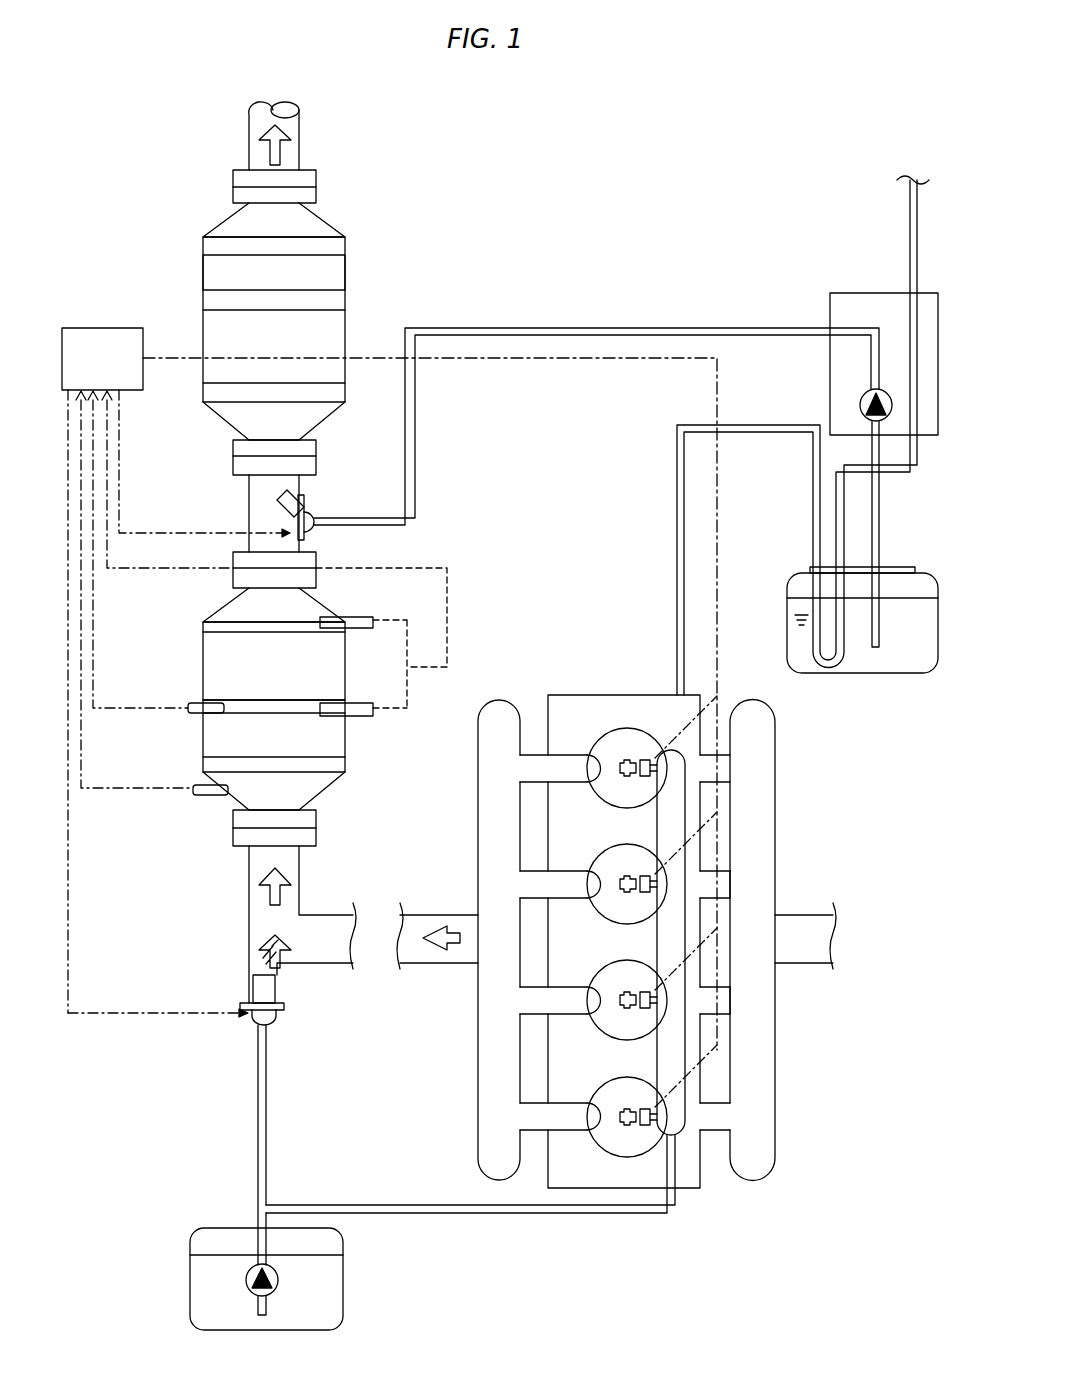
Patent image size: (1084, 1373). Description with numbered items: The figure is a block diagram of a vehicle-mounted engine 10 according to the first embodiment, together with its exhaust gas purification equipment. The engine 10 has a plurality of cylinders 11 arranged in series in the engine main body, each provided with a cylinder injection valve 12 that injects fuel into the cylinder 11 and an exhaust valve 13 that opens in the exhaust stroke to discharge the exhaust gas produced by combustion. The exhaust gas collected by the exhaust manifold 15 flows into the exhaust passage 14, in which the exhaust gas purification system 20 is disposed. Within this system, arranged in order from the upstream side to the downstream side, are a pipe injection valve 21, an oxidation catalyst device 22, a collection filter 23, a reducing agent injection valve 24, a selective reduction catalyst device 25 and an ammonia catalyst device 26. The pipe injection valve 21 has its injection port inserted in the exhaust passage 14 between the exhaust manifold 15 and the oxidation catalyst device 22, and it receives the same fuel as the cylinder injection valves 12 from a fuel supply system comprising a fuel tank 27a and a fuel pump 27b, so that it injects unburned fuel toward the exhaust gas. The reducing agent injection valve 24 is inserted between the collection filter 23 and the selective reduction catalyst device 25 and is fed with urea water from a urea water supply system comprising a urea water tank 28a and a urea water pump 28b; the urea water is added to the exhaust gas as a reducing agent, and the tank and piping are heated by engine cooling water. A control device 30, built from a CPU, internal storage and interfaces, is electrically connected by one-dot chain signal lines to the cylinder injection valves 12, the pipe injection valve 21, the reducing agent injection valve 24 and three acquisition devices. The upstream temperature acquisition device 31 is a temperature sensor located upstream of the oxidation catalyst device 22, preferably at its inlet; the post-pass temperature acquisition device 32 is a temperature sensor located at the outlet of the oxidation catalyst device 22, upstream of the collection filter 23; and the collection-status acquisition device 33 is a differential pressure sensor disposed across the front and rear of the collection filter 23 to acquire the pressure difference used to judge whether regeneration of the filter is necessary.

The engine 10 is at (547, 672).
The cylinder 11 is at (622, 728).
The cylinder injection valve 12 is at (648, 758).
The exhaust valve 13 is at (595, 766).
The exhaust passage 14 is at (318, 968).
The exhaust manifold 15 is at (498, 698).
The exhaust gas purification system 20 is at (133, 190).
The pipe injection valve 21 is at (262, 1025).
The oxidation catalyst device 22 is at (347, 737).
The collection filter 23 is at (347, 665).
The reducing agent injection valve 24 is at (318, 530).
The selective reduction catalyst device 25 is at (347, 325).
The ammonia catalyst device 26 is at (347, 272).
The fuel tank 27a is at (190, 1283).
The fuel pump 27b is at (280, 1280).
The urea water tank 28a is at (890, 673).
The urea water pump 28b is at (860, 405).
The control device 30 is at (88, 371).
The upstream temperature acquisition device 31 is at (210, 797).
The post-pass temperature acquisition device 32 is at (205, 715).
The collection-status acquisition device 33 is at (352, 617).